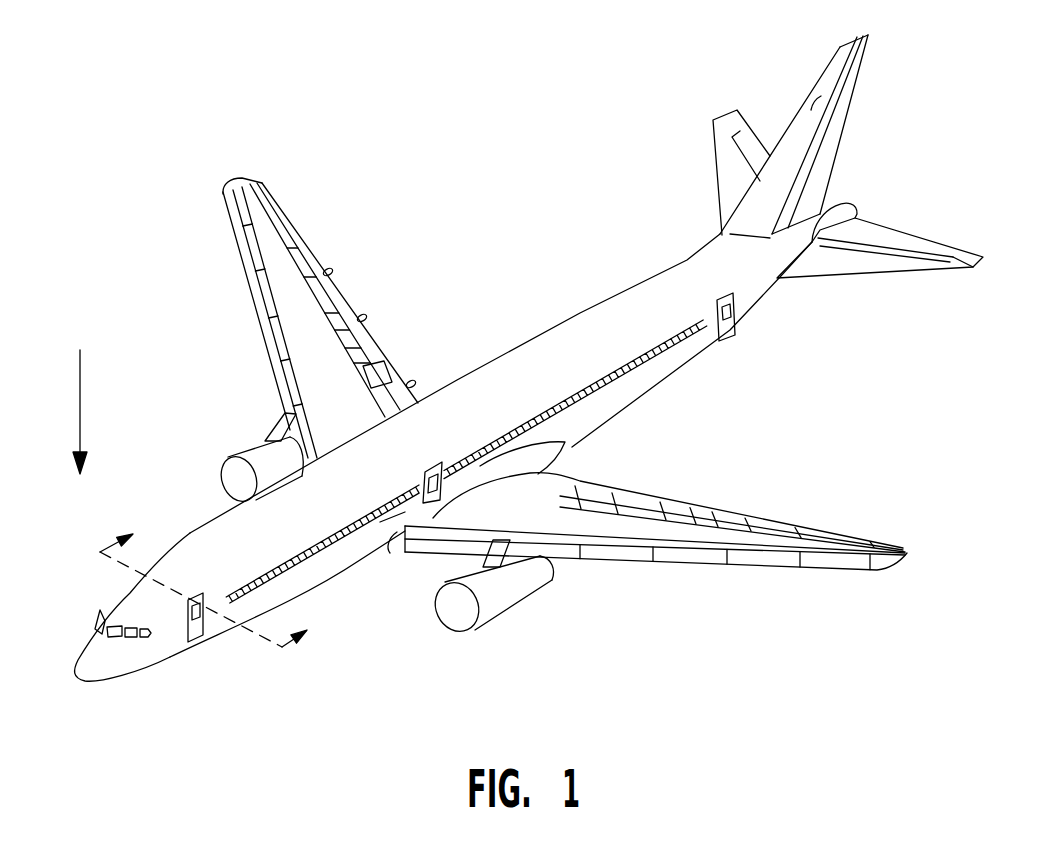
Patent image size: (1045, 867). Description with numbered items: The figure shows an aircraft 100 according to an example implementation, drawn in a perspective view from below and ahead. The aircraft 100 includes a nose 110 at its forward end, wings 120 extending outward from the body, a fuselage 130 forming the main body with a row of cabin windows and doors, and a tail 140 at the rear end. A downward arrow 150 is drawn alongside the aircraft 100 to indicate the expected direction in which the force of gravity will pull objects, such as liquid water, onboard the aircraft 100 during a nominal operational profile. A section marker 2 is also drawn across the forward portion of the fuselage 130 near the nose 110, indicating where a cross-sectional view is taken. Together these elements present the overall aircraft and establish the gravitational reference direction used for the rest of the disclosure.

The aircraft 100 is at (460, 265).
The nose 110 is at (98, 680).
The wings 120 is at (255, 178).
The fuselage 130 is at (620, 404).
The tail 140 is at (868, 48).
The downward arrow 150 is at (82, 398).
The section line 2- 2 is at (210, 581).